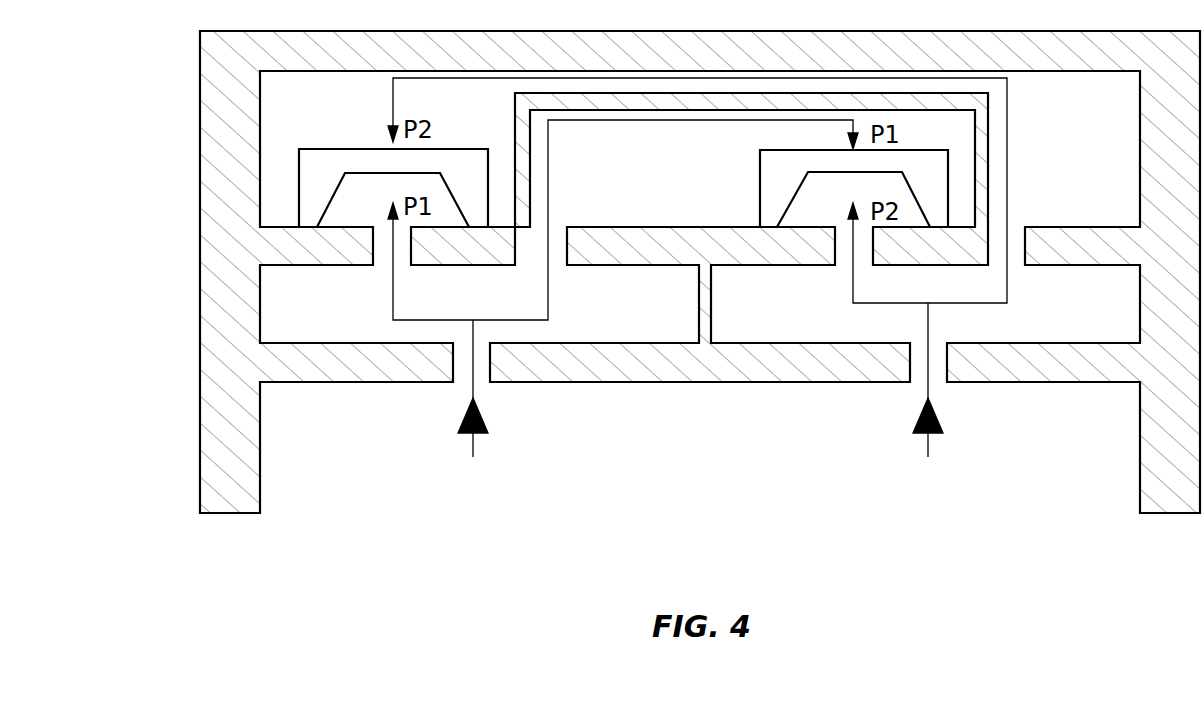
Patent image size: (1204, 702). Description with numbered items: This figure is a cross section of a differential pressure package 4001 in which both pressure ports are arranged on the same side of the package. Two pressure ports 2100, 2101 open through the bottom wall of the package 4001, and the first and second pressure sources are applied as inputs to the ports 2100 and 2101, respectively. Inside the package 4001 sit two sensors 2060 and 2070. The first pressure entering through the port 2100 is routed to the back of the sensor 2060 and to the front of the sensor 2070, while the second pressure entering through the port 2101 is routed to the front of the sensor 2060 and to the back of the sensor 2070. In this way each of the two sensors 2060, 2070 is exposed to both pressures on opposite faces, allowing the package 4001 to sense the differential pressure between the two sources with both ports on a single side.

The differential pressure package 4001 is at (730, 528).
The sensor 2060 is at (372, 148).
The sensor 2070 is at (760, 177).
The pressure port 2100 is at (482, 377).
The pressure port 2101 is at (937, 377).